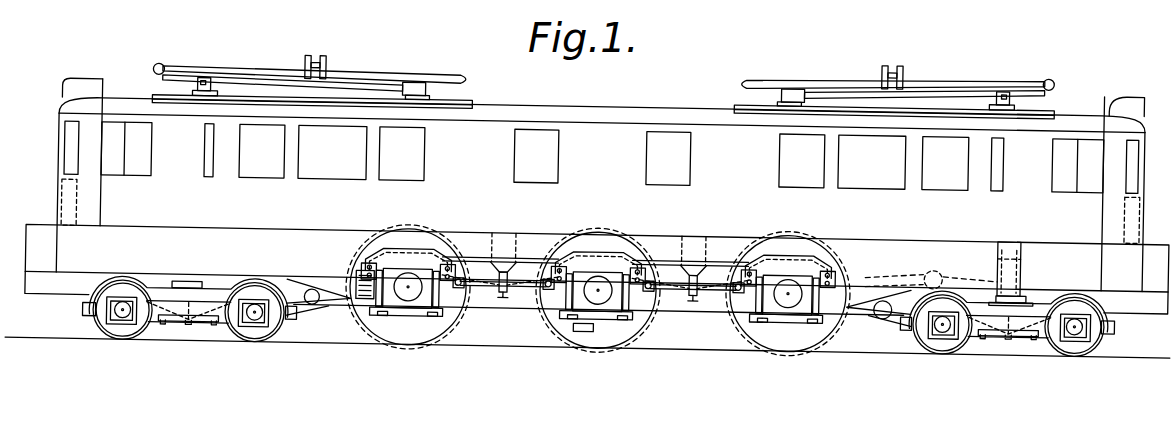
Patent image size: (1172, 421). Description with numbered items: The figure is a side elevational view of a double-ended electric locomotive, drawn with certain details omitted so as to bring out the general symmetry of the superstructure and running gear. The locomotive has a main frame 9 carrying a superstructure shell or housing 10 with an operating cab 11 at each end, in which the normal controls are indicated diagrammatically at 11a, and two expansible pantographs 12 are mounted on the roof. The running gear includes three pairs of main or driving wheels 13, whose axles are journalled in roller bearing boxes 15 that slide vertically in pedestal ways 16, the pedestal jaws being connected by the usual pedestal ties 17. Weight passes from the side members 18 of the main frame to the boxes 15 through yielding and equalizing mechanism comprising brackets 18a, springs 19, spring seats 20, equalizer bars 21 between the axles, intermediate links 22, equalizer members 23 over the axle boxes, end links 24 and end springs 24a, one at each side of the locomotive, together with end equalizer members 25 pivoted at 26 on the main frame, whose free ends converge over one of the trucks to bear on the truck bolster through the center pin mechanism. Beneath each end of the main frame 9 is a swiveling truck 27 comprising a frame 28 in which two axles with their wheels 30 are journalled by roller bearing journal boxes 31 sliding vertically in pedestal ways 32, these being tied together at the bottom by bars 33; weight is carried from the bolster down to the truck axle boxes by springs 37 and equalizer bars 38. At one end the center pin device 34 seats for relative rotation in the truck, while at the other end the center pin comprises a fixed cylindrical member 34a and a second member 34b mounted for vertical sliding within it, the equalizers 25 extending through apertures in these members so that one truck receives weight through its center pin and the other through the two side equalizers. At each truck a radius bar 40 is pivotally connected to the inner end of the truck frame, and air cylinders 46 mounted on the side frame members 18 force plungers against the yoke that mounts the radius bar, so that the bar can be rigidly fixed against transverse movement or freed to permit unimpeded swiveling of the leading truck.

The main frame 9 is at (597, 275).
The superstructure shell or housing 10 is at (598, 195).
The operating cab 11 is at (56, 139).
The controls 11a is at (60, 197).
The expansible pantograph 12 is at (347, 60).
The main or driving wheel 13 is at (442, 322).
The roller bearing box 15 is at (409, 281).
The pedestal way 16 is at (394, 303).
The pedestal tie 17 is at (585, 321).
The side member of the main frame 18 is at (531, 256).
The bracket 18a is at (504, 258).
The spring 19 is at (533, 287).
The spring seat 20 is at (471, 292).
The equalizer bar 21 is at (711, 277).
The intermediate link 22 is at (451, 262).
The equalizer member 23 is at (407, 242).
The end link 24 is at (349, 263).
The end spring 24a is at (357, 282).
The end equalizer member 25 is at (913, 257).
The pivot 26 is at (948, 256).
The swiveling truck 27 is at (599, 328).
The truck frame 28 is at (160, 285).
The truck wheel 30 is at (142, 331).
The roller bearing journal box 31 is at (115, 325).
The pedestal way 32 is at (86, 306).
The bar 33 is at (127, 325).
The center pin device 34 is at (196, 278).
The fixed cylindrical member 34a is at (1021, 271).
The second center pin member 34b is at (1021, 282).
The spring 37 is at (179, 320).
The equalizer bar 38 is at (200, 318).
The radius bar 40 is at (332, 301).
The air cylinder 46 is at (313, 284).